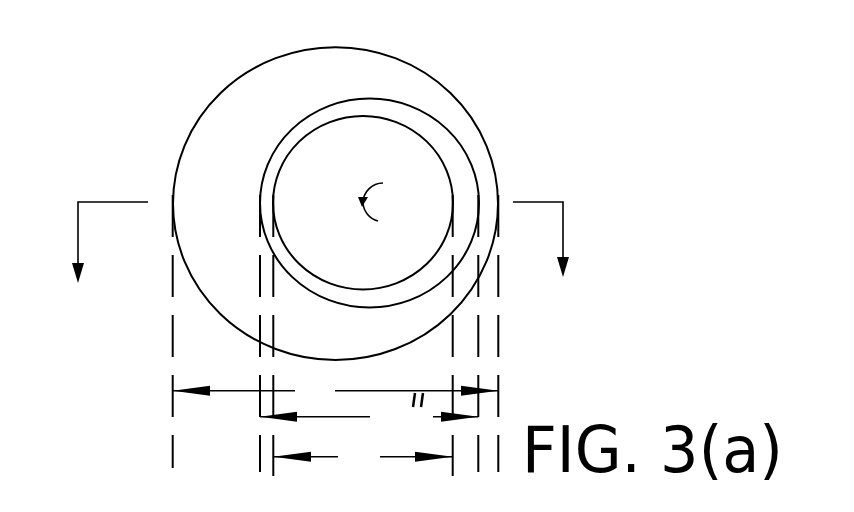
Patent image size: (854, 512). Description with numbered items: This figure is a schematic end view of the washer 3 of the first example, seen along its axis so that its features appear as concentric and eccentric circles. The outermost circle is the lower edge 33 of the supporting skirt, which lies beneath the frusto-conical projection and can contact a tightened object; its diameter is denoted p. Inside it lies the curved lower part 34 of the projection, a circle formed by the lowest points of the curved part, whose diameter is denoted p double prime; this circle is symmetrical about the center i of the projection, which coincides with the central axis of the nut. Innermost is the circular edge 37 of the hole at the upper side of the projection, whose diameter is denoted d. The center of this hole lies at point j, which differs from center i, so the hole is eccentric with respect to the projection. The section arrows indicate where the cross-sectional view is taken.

The washer 3 is at (449, 50).
The lower edge of the skirt 33 is at (493, 165).
The curved lower part 34 is at (453, 135).
The edge of the hole 37 is at (394, 121).